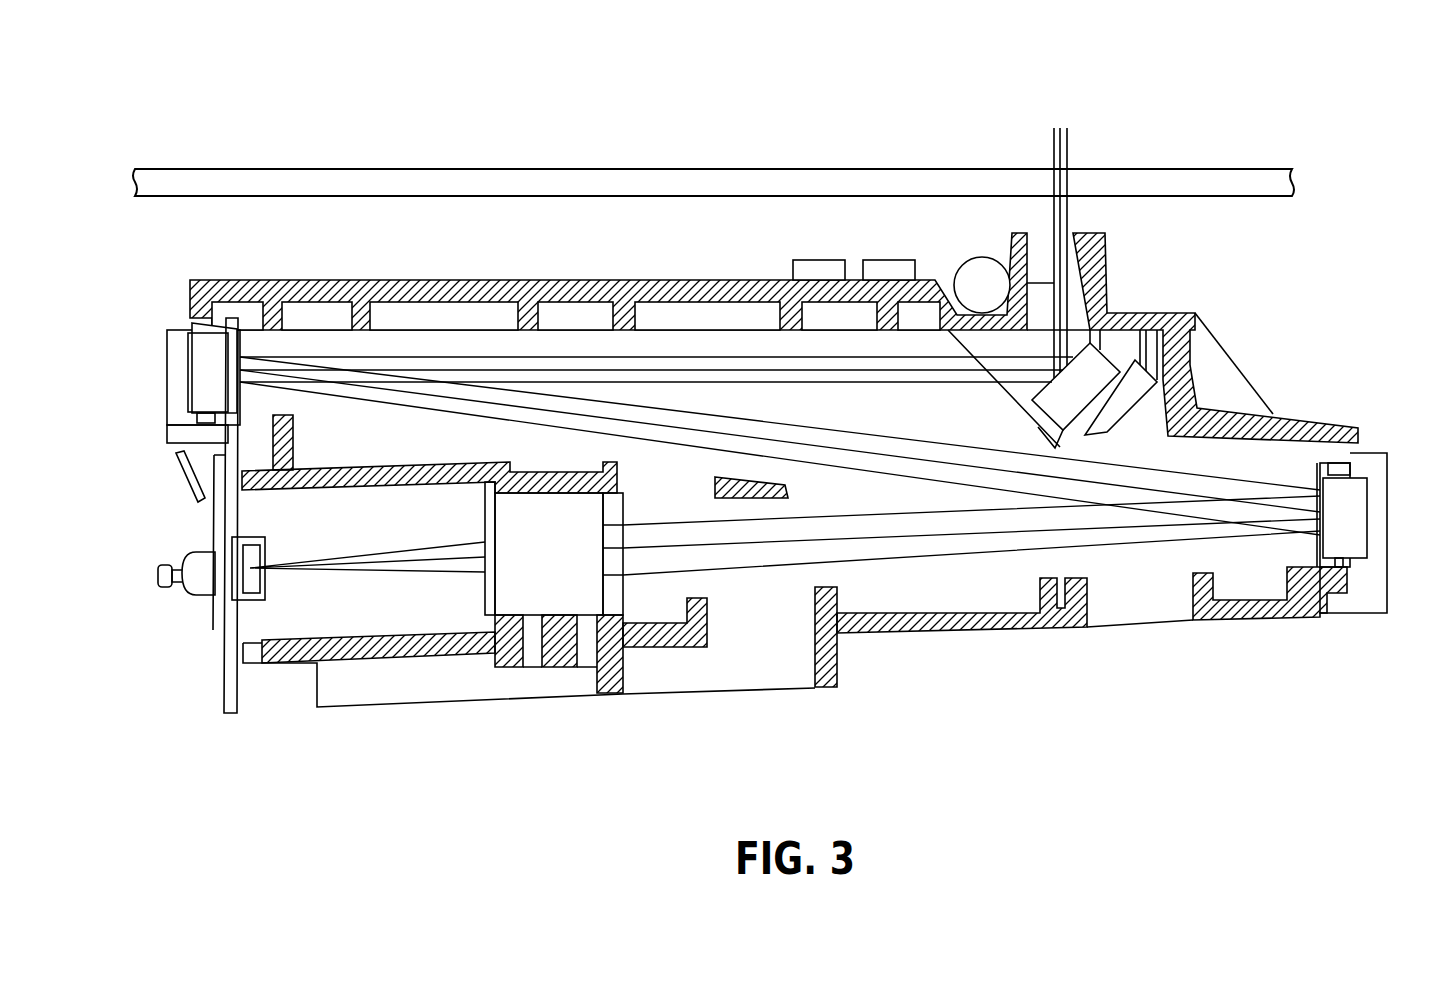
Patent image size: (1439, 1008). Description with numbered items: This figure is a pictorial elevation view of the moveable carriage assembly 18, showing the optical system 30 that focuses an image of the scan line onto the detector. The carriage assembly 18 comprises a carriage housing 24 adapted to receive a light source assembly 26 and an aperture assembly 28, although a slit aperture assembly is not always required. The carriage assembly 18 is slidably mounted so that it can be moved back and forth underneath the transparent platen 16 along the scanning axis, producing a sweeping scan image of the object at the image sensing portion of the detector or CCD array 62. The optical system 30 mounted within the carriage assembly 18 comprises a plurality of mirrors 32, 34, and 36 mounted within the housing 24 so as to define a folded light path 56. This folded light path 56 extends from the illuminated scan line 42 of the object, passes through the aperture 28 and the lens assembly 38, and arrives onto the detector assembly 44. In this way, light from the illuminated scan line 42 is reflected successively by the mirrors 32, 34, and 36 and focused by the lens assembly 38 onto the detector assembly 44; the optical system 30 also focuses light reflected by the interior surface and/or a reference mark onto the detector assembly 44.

The transparent platen 16 is at (658, 168).
The carriage assembly 18 is at (1283, 302).
The carriage housing 24 is at (1227, 357).
The light source assembly 26 is at (977, 268).
The aperture assembly 28 is at (1074, 232).
The optical system 30 is at (942, 395).
The mirror 32 is at (1040, 398).
The mirror 34 is at (200, 347).
The mirror 36 is at (1350, 505).
The lens assembly 38 is at (485, 592).
The illuminated scan line 42 is at (1057, 236).
The detector assembly 44 is at (275, 540).
The folded light path 56 is at (1120, 530).
The CCD array 62 is at (263, 570).